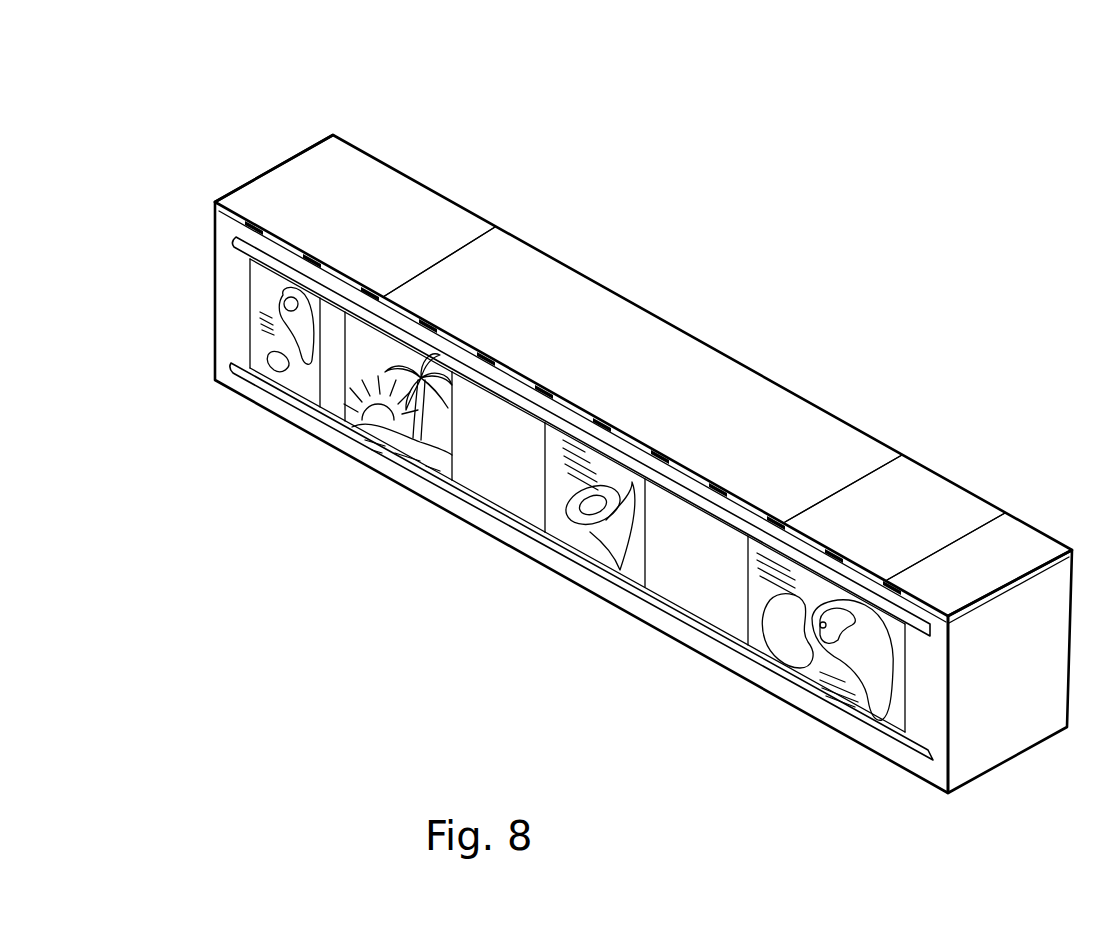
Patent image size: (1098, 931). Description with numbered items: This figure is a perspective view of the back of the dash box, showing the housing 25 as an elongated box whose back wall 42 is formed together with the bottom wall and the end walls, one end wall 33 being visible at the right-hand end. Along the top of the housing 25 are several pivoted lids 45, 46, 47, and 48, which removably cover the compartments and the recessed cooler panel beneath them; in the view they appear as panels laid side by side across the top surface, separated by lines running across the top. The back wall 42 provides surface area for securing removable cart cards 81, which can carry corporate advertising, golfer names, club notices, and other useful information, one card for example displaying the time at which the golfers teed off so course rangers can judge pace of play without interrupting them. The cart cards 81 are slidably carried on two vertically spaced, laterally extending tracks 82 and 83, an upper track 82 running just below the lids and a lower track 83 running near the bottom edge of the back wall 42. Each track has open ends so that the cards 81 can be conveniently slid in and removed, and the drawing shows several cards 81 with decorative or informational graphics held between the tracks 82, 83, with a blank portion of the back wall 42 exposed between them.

The housing 25 is at (250, 135).
The end wall 33 is at (1008, 715).
The back wall 42 is at (493, 487).
The pivoted lid 45 is at (1030, 550).
The pivoted lid 46 is at (936, 505).
The pivoted lid 47 is at (648, 340).
The pivoted lid 48 is at (400, 203).
The cart card 81 is at (350, 373).
The track 82 is at (214, 237).
The track 83 is at (915, 752).